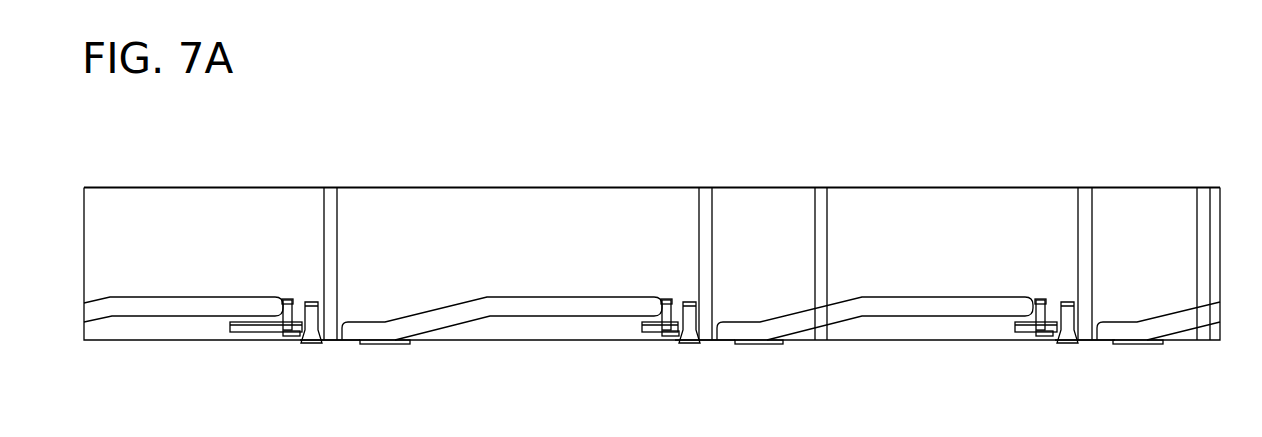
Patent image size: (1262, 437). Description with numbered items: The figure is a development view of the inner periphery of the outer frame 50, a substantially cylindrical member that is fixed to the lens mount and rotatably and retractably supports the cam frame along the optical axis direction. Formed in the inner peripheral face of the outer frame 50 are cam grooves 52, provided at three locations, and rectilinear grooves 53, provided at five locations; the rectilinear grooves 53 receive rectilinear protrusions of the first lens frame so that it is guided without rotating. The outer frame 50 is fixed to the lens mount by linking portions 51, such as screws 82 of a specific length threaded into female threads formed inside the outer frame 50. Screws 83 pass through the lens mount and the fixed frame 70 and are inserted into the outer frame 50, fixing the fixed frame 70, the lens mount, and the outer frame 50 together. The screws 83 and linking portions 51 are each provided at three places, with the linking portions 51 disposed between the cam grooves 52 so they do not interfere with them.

The outer frame 50 is at (245, 162).
The linking portion 51 is at (320, 330).
The cam groove 52 is at (132, 305).
The rectilinear groove 53 is at (328, 200).
The fixed frame 70 is at (265, 328).
The screw 82 is at (310, 327).
The screw 83 is at (285, 305).